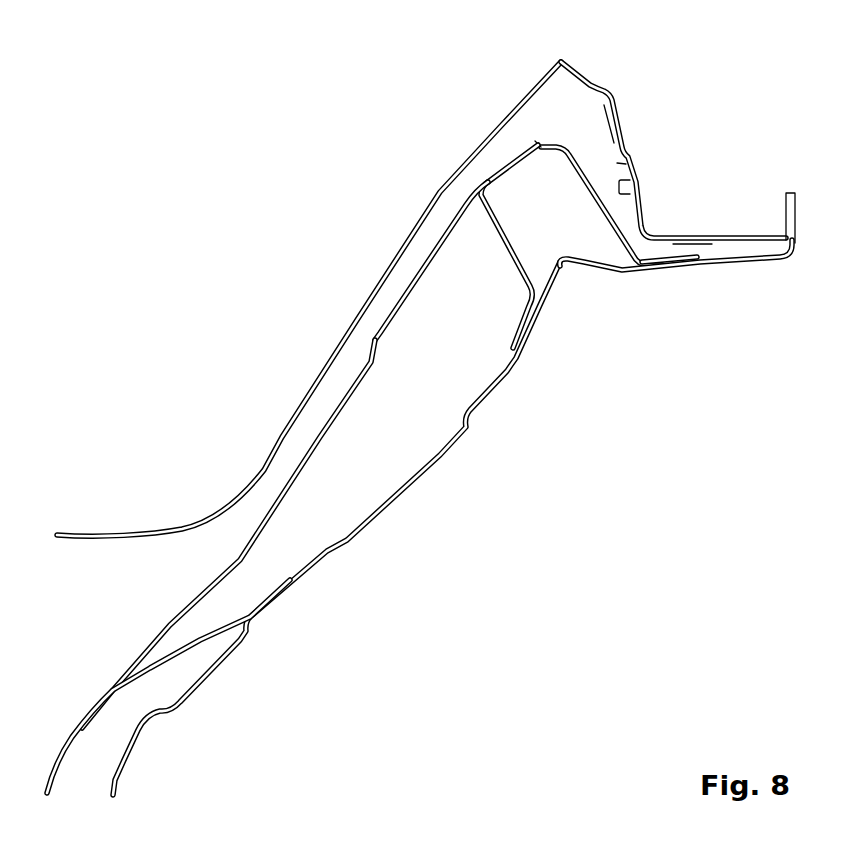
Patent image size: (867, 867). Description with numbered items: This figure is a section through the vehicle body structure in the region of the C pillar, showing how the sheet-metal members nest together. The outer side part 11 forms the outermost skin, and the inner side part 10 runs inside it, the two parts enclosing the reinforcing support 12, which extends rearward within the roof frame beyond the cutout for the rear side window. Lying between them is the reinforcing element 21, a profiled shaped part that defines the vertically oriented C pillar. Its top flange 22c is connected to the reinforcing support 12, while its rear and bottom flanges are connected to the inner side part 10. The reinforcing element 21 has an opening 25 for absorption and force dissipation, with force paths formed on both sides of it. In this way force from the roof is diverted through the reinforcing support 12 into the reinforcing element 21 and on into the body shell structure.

The inner side part 10 is at (400, 494).
The outer side part 11 is at (407, 240).
The reinforcing support 12 is at (556, 143).
The reinforcing element 21 is at (414, 283).
The top flange 22c is at (512, 157).
The opening 25 is at (352, 400).